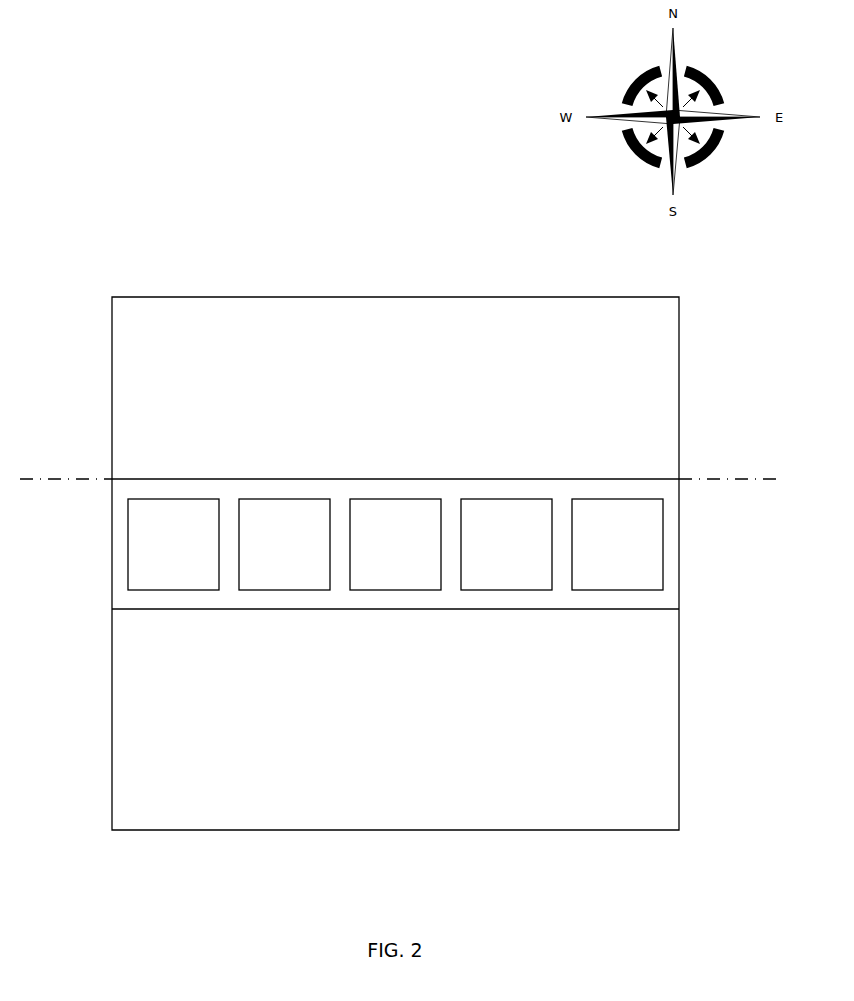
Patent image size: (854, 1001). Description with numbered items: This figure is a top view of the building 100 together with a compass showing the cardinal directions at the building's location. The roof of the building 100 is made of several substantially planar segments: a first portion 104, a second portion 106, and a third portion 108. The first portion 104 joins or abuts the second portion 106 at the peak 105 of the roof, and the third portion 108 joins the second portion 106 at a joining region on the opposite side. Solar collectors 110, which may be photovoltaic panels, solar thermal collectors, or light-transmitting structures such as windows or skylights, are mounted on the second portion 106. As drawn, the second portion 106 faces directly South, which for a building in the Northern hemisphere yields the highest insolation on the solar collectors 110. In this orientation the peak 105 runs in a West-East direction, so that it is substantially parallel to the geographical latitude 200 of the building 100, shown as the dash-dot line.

The building 100 is at (89, 261).
The first portion 104 is at (663, 786).
The peak 105 is at (137, 478).
The second portion 106 is at (663, 602).
The third portion 108 is at (663, 330).
The solar collectors 110 is at (173, 497).
The geographical latitude 200 is at (742, 478).